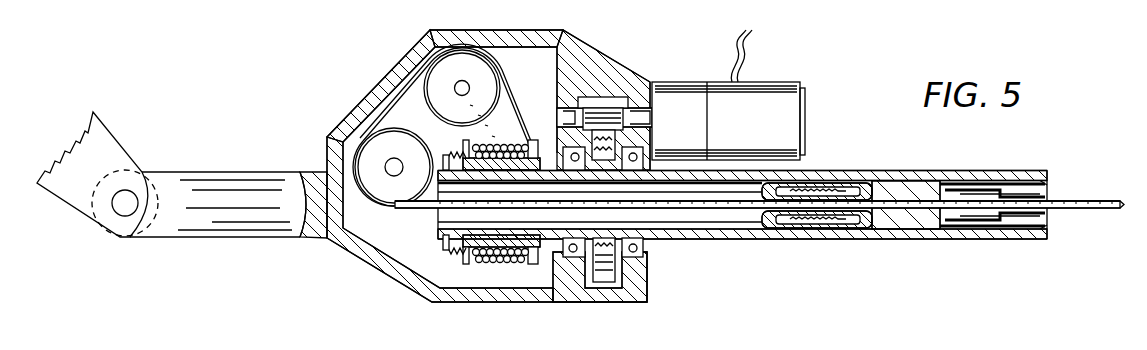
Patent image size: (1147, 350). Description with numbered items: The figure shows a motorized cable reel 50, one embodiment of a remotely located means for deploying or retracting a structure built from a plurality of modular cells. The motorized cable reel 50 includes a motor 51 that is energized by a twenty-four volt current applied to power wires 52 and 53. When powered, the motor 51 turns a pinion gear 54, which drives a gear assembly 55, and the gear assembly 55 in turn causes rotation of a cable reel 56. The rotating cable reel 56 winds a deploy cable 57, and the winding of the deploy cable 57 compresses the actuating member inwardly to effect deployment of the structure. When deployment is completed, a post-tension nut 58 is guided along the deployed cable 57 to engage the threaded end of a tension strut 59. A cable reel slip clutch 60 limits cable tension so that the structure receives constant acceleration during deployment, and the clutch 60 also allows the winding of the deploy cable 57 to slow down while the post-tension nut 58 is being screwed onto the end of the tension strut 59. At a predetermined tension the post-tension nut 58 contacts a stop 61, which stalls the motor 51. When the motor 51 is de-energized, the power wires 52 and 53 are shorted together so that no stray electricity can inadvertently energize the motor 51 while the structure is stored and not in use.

The motorized cable reel 50 is at (352, 84).
The motor 51 is at (810, 127).
The power wire 52 is at (745, 48).
The power wire 53 is at (747, 60).
The pinion gear 54 is at (606, 106).
The gear assembly 55 is at (618, 272).
The cable reel 56 is at (535, 140).
The deploy cable 57 is at (418, 210).
The post-tension nut 58 is at (813, 231).
The tension strut 59 is at (963, 172).
The cable reel slip clutch 60 is at (441, 247).
The stop 61 is at (915, 225).